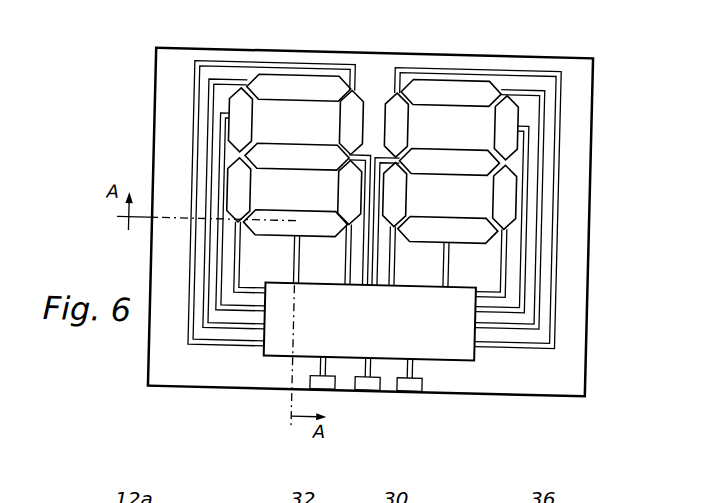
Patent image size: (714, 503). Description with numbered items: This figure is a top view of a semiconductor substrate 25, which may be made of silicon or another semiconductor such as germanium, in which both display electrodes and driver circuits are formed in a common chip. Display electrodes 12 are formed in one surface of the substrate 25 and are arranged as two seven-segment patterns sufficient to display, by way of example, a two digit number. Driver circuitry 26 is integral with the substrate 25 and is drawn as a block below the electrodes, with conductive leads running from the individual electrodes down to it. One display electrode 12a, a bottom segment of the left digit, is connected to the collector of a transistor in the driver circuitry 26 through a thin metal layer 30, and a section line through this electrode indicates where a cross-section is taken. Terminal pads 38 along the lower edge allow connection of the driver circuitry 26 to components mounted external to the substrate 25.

The display electrodes 12 is at (375, 178).
The display electrode 12a is at (304, 225).
The semiconductor substrate 25 is at (162, 127).
The driver circuitry 26 is at (270, 352).
The thin metal layer 30 is at (300, 259).
The terminal pads 38 is at (409, 389).